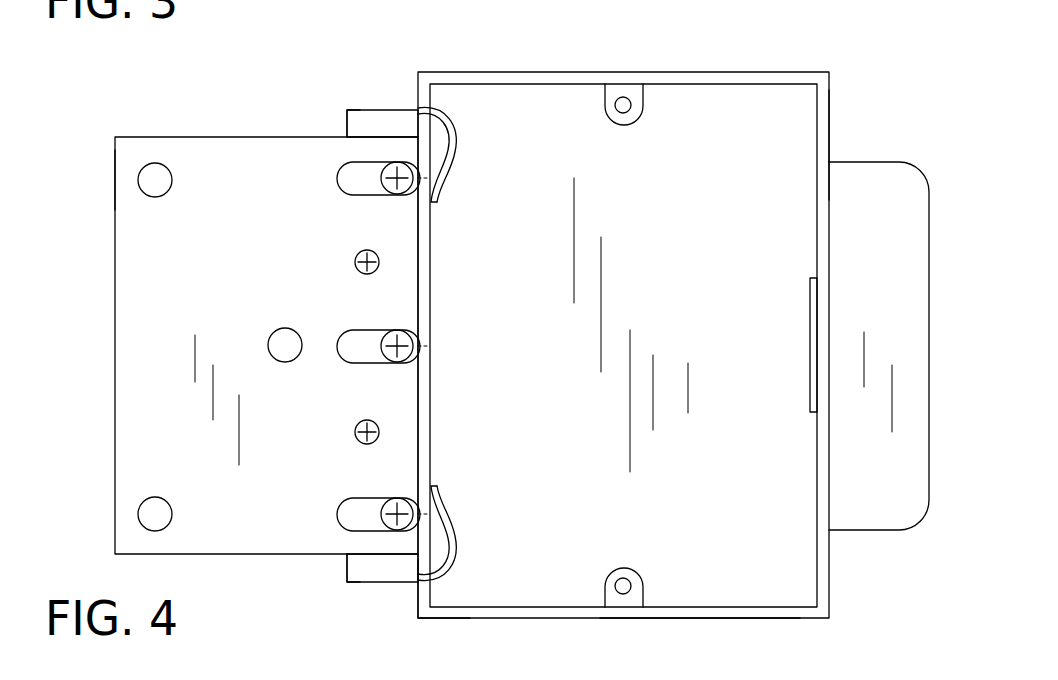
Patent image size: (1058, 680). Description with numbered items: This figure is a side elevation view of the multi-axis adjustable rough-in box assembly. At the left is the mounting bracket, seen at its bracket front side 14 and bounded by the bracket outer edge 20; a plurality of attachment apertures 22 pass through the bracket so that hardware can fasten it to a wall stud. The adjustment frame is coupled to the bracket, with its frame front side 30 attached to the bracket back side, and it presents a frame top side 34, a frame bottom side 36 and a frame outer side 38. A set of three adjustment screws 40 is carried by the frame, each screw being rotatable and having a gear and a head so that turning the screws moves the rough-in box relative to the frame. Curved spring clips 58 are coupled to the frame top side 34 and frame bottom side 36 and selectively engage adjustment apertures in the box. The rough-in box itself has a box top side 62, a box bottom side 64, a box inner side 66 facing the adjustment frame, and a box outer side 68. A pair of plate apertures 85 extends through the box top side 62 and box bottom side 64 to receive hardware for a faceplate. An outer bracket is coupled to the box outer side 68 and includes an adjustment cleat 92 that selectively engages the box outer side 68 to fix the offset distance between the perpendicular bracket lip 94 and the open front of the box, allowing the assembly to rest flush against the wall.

The bracket front side 14 is at (215, 177).
The bracket outer edge 20 is at (115, 177).
The attachment apertures 22 is at (285, 346).
The frame front side 30 is at (383, 120).
The frame top side 34 is at (350, 110).
The frame bottom side 36 is at (382, 583).
The frame outer side 38 is at (347, 570).
The adjustment screws 40 is at (392, 180).
The clips 58 is at (453, 138).
The box top side 62 is at (750, 70).
The box bottom side 64 is at (707, 619).
The box inner side 66 is at (417, 597).
The box outer side 68 is at (829, 120).
The plate apertures 85 is at (624, 585).
The adjustment cleat 92 is at (810, 345).
The bracket lip 94 is at (873, 513).